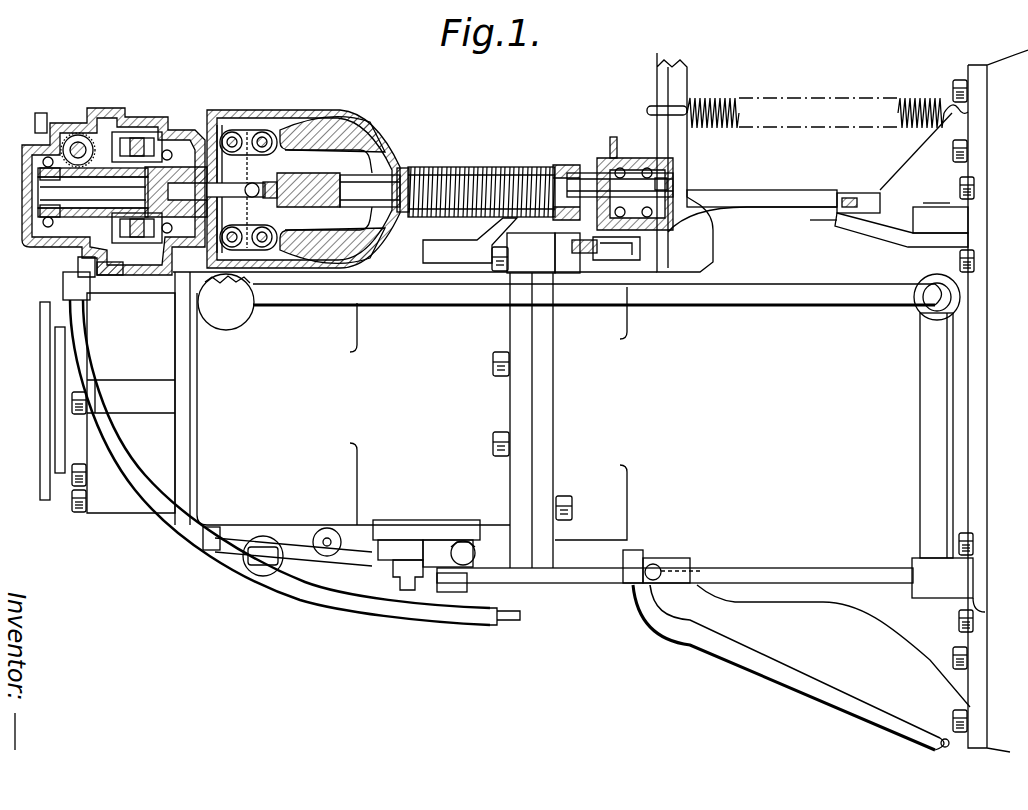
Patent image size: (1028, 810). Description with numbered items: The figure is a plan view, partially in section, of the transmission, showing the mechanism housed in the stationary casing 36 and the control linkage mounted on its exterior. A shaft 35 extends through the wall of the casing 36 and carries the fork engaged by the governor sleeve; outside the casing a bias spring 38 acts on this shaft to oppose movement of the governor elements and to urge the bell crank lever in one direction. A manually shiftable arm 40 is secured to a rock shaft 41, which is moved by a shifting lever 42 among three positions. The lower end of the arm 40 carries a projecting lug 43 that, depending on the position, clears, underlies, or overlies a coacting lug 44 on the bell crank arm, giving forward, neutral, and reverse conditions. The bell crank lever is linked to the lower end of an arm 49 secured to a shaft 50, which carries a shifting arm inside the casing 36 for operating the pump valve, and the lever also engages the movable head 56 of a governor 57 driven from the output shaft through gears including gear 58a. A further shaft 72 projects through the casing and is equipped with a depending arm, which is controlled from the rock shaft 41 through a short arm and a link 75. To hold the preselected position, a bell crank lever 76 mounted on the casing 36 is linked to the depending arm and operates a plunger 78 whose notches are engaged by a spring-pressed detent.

The gear 58a is at (133, 142).
The governor 57 is at (303, 118).
The arm 49 is at (478, 222).
The movable head 56 is at (670, 163).
The shaft 35 is at (688, 182).
The bias spring 38 is at (730, 122).
The projecting lug 43 is at (850, 198).
The coacting lug 44 is at (880, 197).
The manually shiftable arm 40 is at (882, 222).
The shifting lever 42 is at (577, 300).
The rock shaft 41 is at (933, 345).
The stationary casing 36 is at (288, 495).
The plunger 78 is at (290, 562).
The bell crank lever 76 is at (348, 560).
The shaft 72 is at (405, 575).
The shaft 50 is at (460, 580).
The link 75 is at (592, 585).